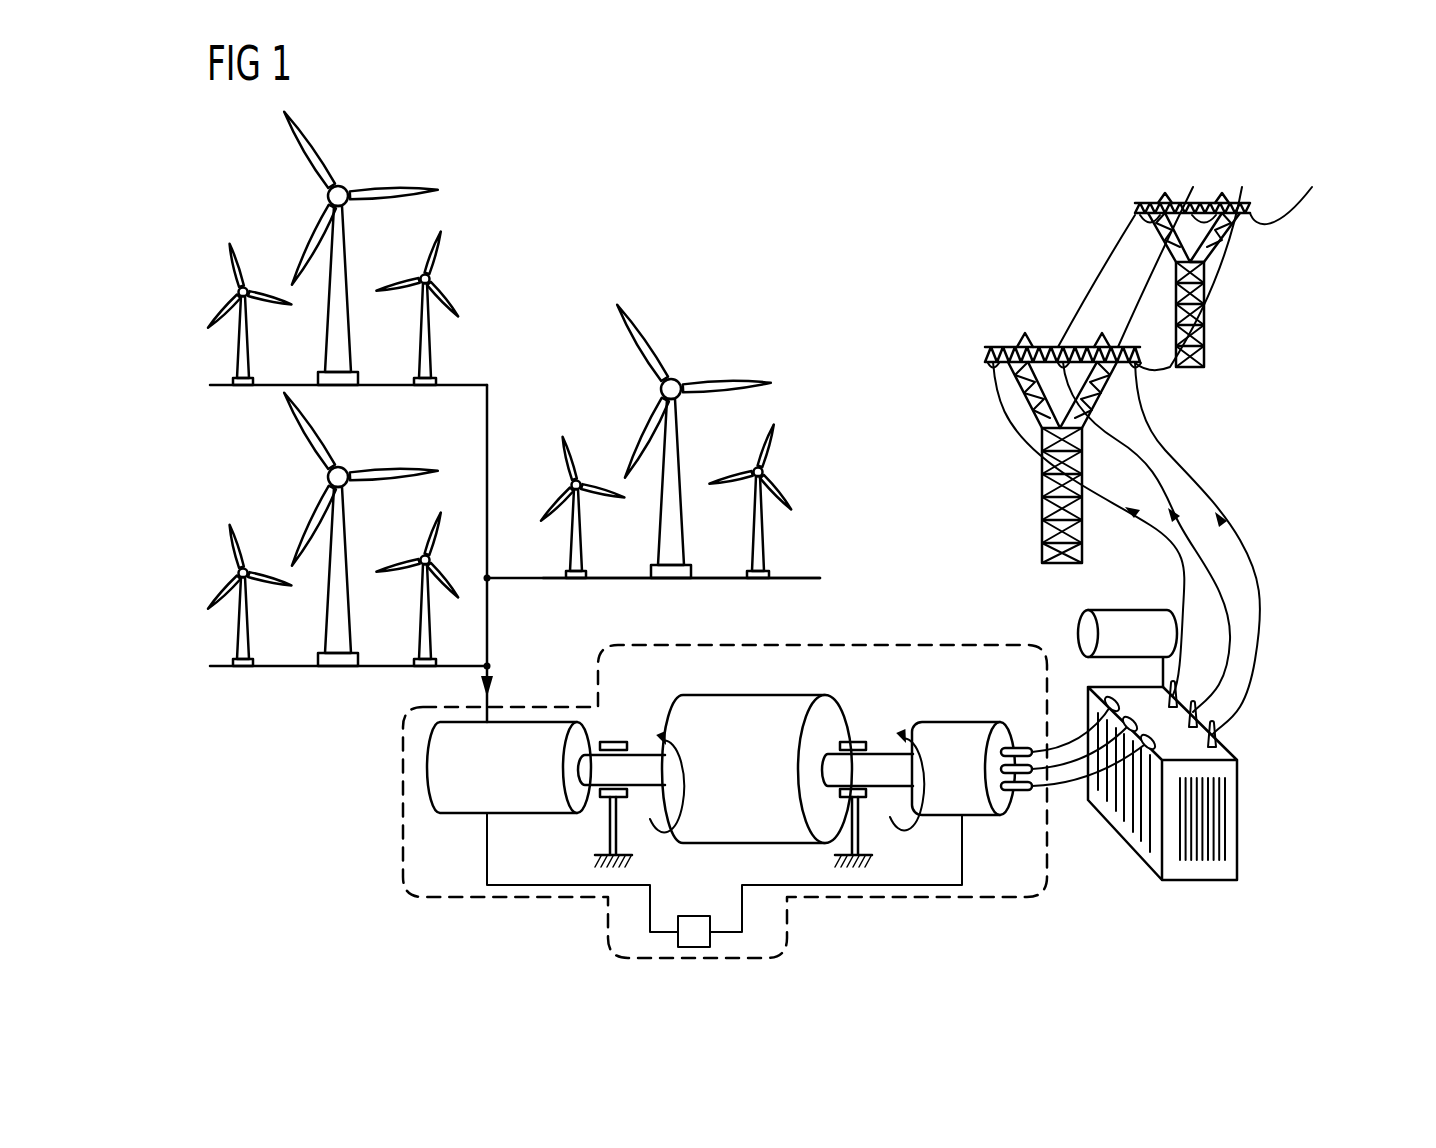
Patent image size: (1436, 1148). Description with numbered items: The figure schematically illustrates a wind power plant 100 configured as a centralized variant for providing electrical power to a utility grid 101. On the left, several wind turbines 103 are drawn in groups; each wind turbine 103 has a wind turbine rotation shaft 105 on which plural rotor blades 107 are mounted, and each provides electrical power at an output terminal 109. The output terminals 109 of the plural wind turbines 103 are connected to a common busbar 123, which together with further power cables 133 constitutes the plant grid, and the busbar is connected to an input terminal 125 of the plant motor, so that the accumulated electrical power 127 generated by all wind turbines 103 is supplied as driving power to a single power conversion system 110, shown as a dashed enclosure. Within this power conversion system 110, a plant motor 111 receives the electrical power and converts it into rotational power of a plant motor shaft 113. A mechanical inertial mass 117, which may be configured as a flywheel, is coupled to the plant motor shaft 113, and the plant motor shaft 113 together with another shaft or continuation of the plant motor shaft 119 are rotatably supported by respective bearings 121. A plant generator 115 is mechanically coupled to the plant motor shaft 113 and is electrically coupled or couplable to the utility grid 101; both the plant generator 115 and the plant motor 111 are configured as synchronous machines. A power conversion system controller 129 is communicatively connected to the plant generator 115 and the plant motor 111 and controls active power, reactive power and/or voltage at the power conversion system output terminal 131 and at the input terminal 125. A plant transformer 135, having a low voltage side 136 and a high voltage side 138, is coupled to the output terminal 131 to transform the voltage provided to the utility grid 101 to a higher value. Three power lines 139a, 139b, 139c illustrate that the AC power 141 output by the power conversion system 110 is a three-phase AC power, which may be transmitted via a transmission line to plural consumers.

The wind power plant 100 is at (1256, 137).
The utility grid 101 is at (1176, 375).
The wind turbine 103 is at (540, 375).
The wind turbine rotation shaft 105 is at (520, 305).
The rotor blades 107 is at (502, 338).
The output terminal 109 is at (524, 436).
The power conversion system 110 is at (725, 764).
The plant motor 111 is at (578, 663).
The plant motor shaft 113 is at (631, 769).
The plant generator 115 is at (963, 732).
The mechanical inertial mass 117 is at (757, 718).
The continuation of the plant motor shaft 119 is at (873, 772).
The bearings 121 is at (735, 851).
The common busbar 123 is at (653, 489).
The input terminal 125 is at (509, 737).
The accumulated electrical power 127 is at (443, 687).
The power conversion system controller 129 is at (724, 880).
The power conversion system output terminal 131 is at (1012, 810).
The power cables 133 is at (500, 519).
The plant transformer 135 is at (1200, 745).
The low voltage side 136 is at (1044, 623).
The high voltage side 138 is at (1267, 649).
The power line 139a is at (1088, 528).
The power line 139b is at (1146, 537).
The power line 139c is at (1207, 548).
The AC power 141 is at (1090, 781).